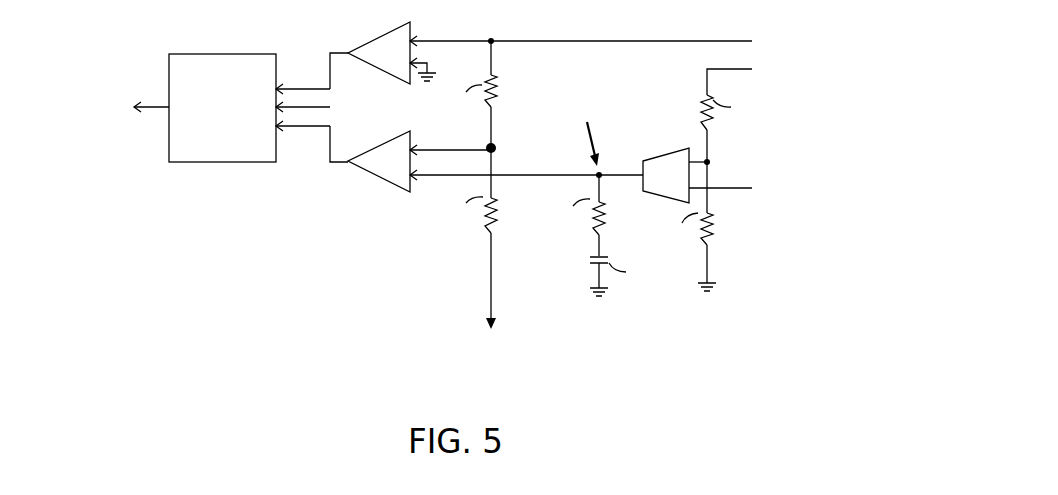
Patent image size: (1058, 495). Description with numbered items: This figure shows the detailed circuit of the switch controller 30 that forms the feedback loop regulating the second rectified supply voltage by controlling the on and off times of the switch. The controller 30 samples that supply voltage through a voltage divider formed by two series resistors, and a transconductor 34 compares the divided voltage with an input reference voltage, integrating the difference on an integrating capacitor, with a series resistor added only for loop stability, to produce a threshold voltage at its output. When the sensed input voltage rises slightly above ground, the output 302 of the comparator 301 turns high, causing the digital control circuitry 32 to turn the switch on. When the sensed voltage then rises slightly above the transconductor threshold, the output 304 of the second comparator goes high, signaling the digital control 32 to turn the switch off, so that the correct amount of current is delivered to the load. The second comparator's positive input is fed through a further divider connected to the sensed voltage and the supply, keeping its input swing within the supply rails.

The switch controller 30 is at (357, 256).
The digital control circuitry 32 is at (233, 148).
The transconductor 34 is at (645, 165).
The comparator 301 is at (376, 40).
The output of the comparator 302 is at (318, 88).
The output of comparator 304 is at (317, 127).